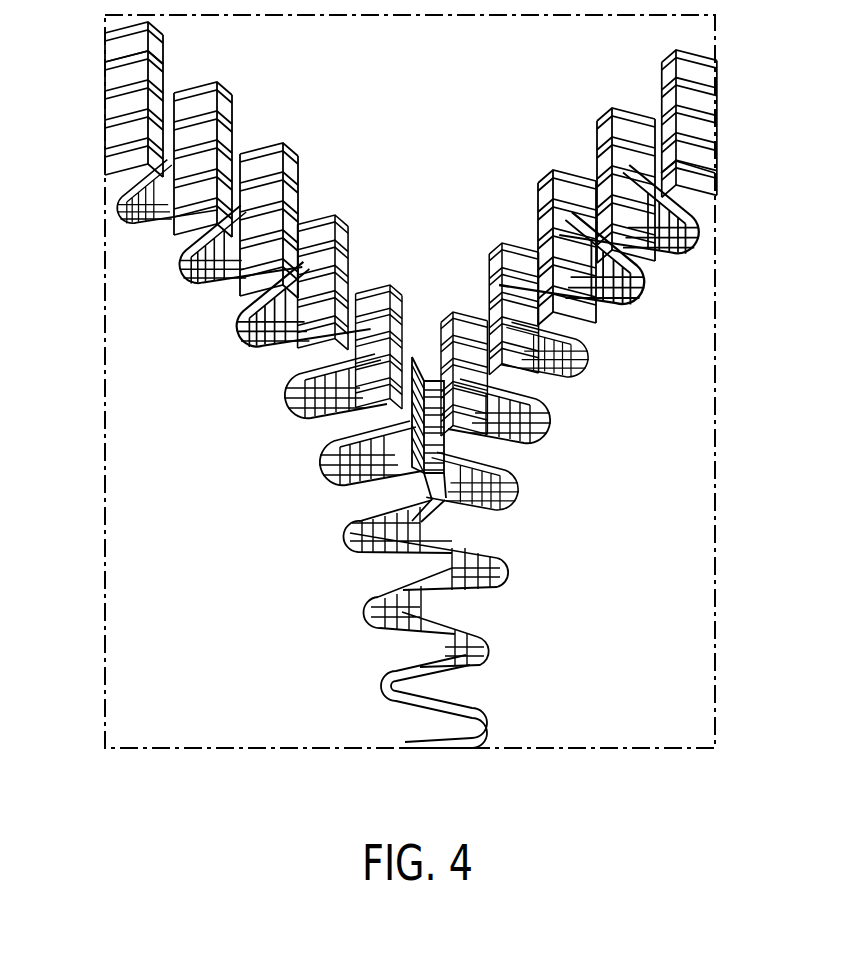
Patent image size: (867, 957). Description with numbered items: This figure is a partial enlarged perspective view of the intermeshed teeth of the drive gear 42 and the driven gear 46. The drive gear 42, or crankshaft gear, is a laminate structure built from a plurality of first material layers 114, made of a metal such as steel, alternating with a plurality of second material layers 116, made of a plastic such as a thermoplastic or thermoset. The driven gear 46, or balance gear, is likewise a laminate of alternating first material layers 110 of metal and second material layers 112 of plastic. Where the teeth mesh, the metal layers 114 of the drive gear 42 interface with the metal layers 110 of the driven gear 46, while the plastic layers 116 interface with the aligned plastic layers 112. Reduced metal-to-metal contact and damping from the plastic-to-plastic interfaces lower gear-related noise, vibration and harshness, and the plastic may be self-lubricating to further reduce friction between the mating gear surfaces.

The drive gear 42 is at (675, 470).
The driven gear 46 is at (147, 500).
The first material layers 110 is at (710, 83).
The second material layers 112 is at (710, 171).
The first material layers 114 is at (108, 107).
The second material layers 116 is at (110, 66).